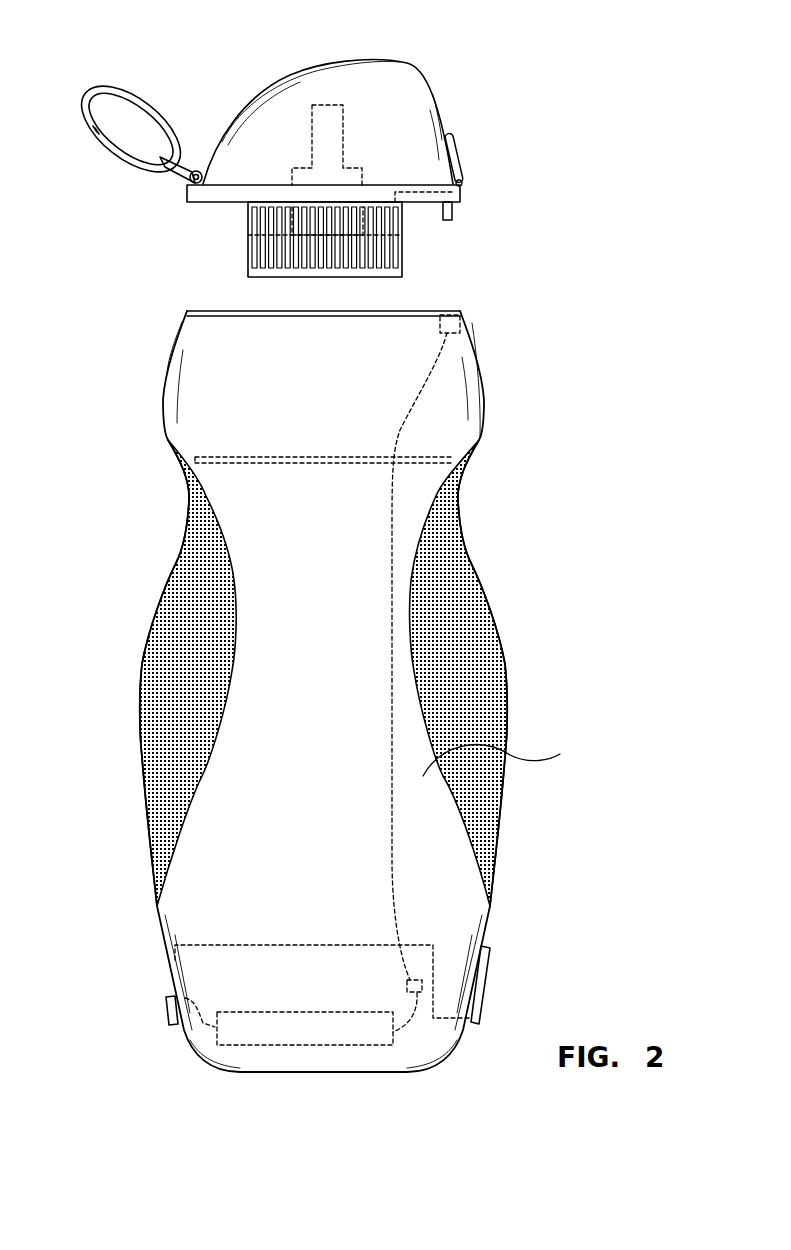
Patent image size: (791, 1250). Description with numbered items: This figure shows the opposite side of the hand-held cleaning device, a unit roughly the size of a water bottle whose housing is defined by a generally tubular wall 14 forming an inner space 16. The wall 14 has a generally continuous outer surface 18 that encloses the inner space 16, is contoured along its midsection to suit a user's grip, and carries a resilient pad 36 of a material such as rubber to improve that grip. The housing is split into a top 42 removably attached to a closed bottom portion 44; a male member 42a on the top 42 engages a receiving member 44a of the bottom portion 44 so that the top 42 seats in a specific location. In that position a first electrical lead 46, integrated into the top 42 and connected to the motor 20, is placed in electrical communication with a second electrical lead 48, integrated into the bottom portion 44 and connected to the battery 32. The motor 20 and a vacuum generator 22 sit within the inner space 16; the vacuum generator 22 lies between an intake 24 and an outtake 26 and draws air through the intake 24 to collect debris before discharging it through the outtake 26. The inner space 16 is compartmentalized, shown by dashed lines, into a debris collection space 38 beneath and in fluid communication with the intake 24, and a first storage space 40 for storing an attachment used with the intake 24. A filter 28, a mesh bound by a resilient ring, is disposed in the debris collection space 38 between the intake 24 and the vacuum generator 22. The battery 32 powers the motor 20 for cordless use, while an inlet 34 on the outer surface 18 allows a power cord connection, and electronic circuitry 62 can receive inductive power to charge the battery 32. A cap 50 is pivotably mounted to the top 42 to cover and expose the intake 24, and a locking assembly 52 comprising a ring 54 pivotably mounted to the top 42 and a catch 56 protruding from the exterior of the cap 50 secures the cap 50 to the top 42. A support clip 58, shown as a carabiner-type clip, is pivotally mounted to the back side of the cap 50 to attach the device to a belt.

The wall 14 is at (165, 374).
The inner space 16 is at (413, 335).
The outer surface 18 is at (306, 370).
The motor 20 is at (390, 253).
The vacuum generator 22 is at (363, 218).
The intake 24 is at (332, 132).
The outtake 26 is at (490, 985).
The filter 28 is at (305, 465).
The battery 32 is at (277, 1028).
The inlet 34 is at (170, 1013).
The resilient pad 36 is at (487, 653).
The debris collection space 38 is at (499, 753).
The first storage space 40 is at (197, 960).
The top 42 is at (463, 86).
The male member 42a is at (452, 212).
The bottom portion 44 is at (542, 924).
The receiving member 44a is at (455, 322).
The first electrical lead 46 is at (455, 190).
The second electrical lead 48 is at (430, 392).
The cap 50 is at (362, 58).
The locking assembly 52 is at (478, 137).
The ring 54 is at (461, 137).
The catch 56 is at (460, 168).
The support clip 58 is at (95, 98).
The electronic circuitry 62 is at (406, 988).